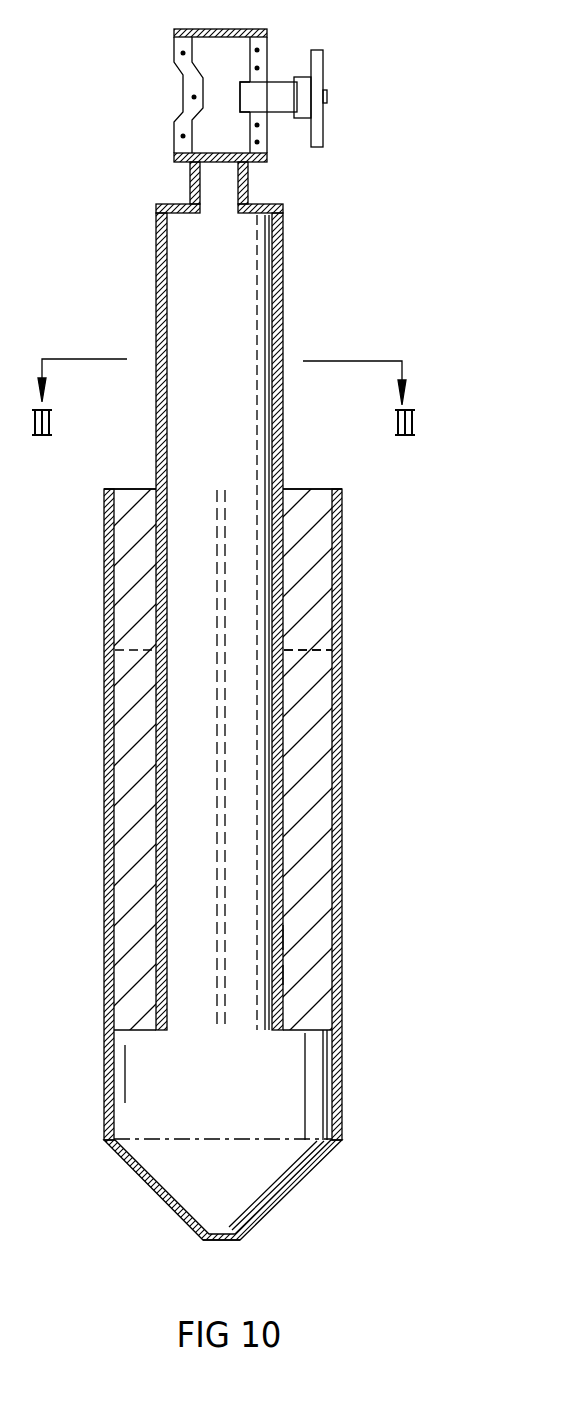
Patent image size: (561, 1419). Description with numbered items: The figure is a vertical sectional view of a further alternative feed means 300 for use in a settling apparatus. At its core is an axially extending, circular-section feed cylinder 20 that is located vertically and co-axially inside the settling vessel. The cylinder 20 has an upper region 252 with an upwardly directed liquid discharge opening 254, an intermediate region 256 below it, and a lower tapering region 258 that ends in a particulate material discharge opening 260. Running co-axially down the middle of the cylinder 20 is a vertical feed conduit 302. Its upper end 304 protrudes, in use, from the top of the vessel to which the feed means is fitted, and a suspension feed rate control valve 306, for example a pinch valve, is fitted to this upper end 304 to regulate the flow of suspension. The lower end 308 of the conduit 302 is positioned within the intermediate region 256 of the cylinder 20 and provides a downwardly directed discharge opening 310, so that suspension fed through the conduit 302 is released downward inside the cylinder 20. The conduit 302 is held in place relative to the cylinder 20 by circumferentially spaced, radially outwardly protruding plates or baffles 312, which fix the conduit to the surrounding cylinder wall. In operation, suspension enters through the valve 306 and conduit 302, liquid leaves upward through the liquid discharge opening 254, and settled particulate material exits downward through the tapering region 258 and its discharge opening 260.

The feed cylinder 20 is at (340, 822).
The upper region 252 is at (300, 617).
The liquid discharge opening 254 is at (127, 475).
The intermediate region 256 is at (300, 975).
The lower tapering region 258 is at (236, 1172).
The particulate material discharge opening 260 is at (230, 1250).
The feed means 300 is at (370, 530).
The vertical feed conduit 302 is at (277, 717).
The upper end 304 is at (280, 278).
The suspension feed rate control valve 306 is at (228, 31).
The lower end 308 is at (285, 937).
The discharge opening 310 is at (228, 1044).
The plates or baffles 312 is at (255, 559).